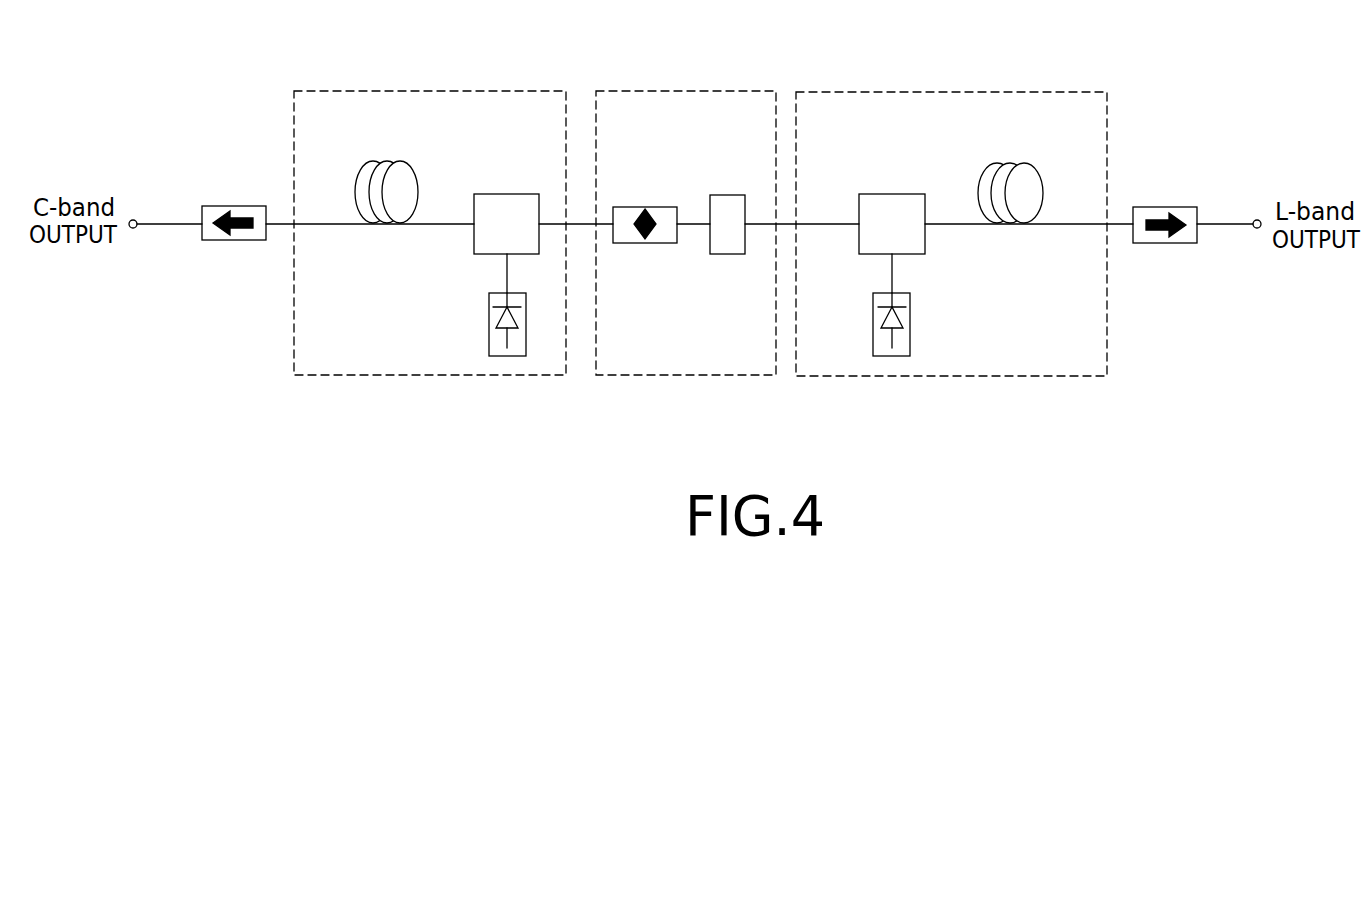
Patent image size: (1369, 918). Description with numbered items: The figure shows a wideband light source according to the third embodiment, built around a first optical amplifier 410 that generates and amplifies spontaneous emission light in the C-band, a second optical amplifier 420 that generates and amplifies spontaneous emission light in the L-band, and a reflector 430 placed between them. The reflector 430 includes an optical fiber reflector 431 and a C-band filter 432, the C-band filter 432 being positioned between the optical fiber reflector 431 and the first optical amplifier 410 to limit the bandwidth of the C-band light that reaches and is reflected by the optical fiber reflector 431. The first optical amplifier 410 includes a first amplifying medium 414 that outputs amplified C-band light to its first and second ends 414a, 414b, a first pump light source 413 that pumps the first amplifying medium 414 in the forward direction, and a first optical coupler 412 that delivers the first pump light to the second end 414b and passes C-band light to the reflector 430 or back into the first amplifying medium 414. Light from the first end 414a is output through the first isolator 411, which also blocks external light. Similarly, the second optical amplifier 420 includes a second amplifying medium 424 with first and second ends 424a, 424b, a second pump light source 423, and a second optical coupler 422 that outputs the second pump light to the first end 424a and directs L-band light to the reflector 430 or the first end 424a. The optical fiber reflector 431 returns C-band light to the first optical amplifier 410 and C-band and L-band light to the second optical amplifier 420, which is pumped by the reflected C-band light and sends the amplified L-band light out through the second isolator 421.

The first optical amplifier 410 is at (388, 91).
The first isolator 411 is at (236, 206).
The first optical coupler 412 is at (507, 194).
The first pump light source 413 is at (489, 325).
The first amplifying medium 414 is at (382, 236).
The first end of first amplifying medium 414a is at (307, 231).
The second end of first amplifying medium 414b is at (420, 216).
The second optical amplifier 420 is at (999, 92).
The second isolator 421 is at (1166, 207).
The second optical coupler 422 is at (892, 194).
The second pump light source 423 is at (873, 325).
The second amplifying medium 424 is at (1016, 239).
The first end of second amplifying medium 424a is at (940, 232).
The second end of second amplifying medium 424b is at (1048, 218).
The reflector 430 is at (684, 91).
The optical fiber reflector 431 is at (725, 195).
The C-band filter 432 is at (645, 207).